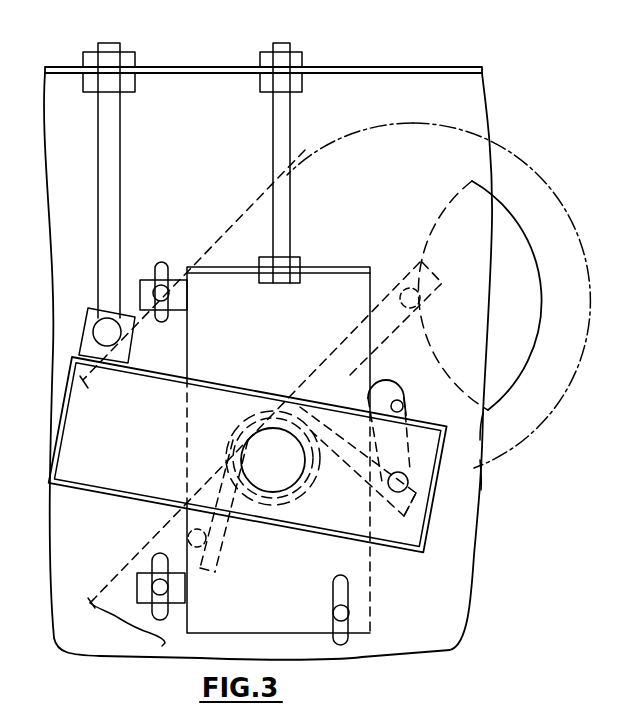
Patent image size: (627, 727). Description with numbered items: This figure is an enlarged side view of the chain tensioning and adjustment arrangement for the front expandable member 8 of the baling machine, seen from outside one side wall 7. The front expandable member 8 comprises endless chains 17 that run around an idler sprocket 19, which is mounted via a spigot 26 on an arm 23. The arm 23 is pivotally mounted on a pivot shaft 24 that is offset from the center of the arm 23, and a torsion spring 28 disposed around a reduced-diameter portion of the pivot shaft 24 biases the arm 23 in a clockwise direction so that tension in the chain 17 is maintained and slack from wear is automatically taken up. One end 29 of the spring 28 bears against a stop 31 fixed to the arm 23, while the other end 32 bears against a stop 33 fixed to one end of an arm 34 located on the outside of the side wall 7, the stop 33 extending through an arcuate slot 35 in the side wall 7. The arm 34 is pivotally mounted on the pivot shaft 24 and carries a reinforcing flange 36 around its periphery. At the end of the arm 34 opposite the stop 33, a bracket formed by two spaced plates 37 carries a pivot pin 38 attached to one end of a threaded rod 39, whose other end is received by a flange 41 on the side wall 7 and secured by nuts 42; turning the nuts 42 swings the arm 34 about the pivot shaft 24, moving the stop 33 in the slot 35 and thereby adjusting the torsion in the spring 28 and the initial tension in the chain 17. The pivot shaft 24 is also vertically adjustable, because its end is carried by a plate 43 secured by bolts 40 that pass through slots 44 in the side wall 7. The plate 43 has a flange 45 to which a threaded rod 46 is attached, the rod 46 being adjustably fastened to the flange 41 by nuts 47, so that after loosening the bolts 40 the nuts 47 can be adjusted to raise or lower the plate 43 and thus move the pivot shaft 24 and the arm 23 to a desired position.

The side wall 7 is at (476, 114).
The front expandable member 8 is at (238, 208).
The endless chain 17 is at (464, 444).
The idler sprocket 19 is at (507, 222).
The arm 23 is at (394, 355).
The pivot shaft 24 is at (290, 478).
The spigot 26 is at (416, 308).
The torsion spring 28 is at (315, 473).
The spring end 29 is at (215, 571).
The stop 31 is at (188, 537).
The spring end 32 is at (412, 510).
The stop 33 is at (403, 482).
The arm 34 is at (135, 450).
The arcuate slot 35 is at (405, 407).
The reinforcing flange 36 is at (479, 474).
The plate 37 is at (92, 322).
The pivot pin 38 is at (98, 337).
The threaded rod 39 is at (120, 183).
The bolt 40 is at (172, 280).
The flange 41 is at (380, 67).
The nut 42 is at (134, 64).
The plate 43 is at (216, 360).
The slot 44 is at (157, 270).
The flange 45 is at (325, 267).
The threaded rod 46 is at (282, 216).
The nut 47 is at (302, 64).